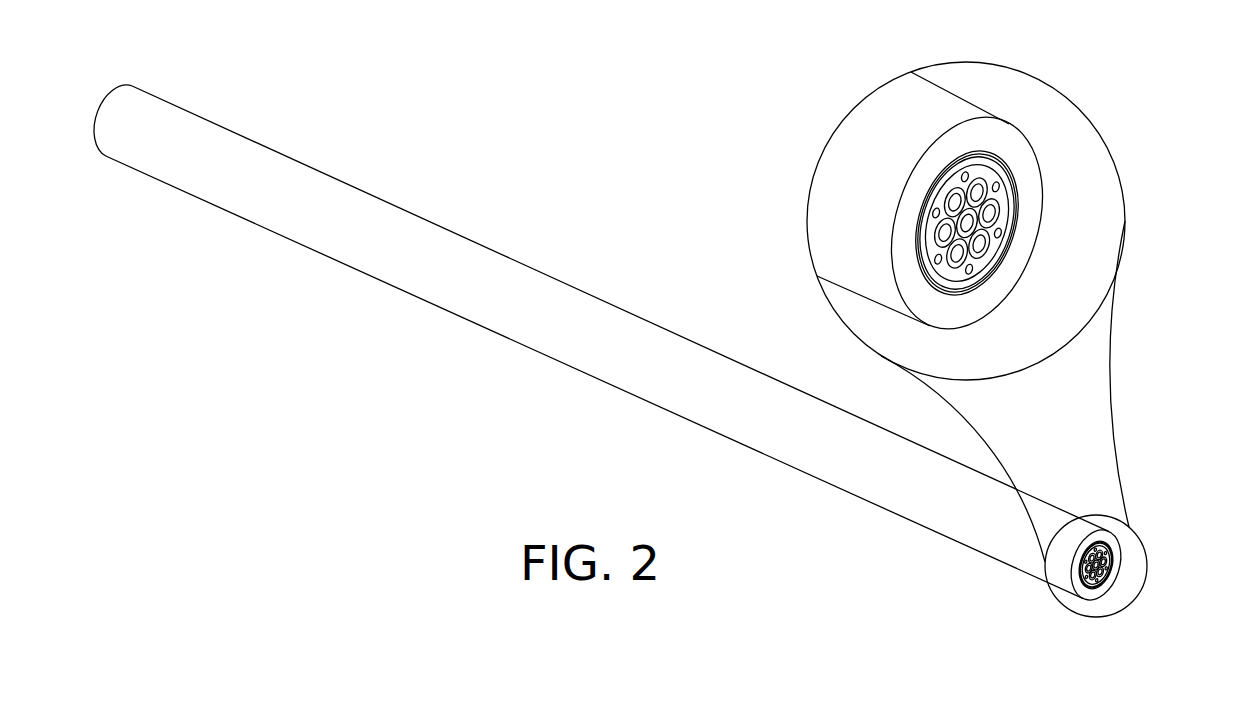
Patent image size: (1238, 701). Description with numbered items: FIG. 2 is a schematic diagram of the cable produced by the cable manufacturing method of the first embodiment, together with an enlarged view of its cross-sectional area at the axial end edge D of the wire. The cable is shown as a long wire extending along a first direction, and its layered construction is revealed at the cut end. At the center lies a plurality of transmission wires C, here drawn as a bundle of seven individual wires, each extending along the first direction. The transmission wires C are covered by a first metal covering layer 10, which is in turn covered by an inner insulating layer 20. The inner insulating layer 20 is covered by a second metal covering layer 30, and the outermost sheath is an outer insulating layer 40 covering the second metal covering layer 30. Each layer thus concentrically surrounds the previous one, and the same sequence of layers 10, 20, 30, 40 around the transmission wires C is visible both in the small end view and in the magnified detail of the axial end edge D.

The first metal covering layer 10 is at (1005, 187).
The inner insulating layer 20 is at (1007, 174).
The second metal covering layer 30 is at (1007, 159).
The outer insulating layer 40 is at (998, 138).
The transmission wires C is at (990, 260).
The axial end edge D is at (958, 300).